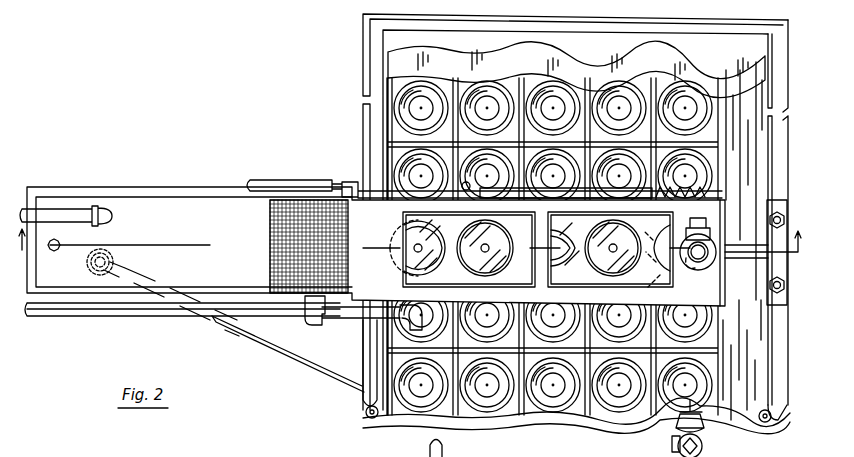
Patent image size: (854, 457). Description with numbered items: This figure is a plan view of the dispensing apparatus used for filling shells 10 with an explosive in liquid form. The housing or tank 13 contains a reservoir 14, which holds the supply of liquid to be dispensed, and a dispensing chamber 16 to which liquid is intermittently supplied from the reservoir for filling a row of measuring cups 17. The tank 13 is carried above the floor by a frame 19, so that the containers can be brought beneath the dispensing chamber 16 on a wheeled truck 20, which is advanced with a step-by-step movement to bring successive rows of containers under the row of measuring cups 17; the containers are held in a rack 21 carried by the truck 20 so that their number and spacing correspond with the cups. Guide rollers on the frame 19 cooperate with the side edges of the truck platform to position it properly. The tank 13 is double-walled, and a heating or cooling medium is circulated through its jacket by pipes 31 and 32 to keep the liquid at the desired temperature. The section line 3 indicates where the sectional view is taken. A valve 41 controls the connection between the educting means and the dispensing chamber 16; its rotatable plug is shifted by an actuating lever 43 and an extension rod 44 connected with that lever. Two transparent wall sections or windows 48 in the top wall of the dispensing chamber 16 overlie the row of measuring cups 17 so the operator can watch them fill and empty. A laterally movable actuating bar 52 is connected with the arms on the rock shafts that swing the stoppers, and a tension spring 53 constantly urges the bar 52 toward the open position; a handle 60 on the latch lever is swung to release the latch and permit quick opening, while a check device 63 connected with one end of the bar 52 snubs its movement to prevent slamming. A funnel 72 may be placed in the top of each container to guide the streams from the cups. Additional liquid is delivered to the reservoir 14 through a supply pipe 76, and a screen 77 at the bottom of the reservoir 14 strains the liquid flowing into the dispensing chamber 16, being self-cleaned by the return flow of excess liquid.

The shells 10 is at (530, 414).
The housing or tank 13 is at (212, 186).
The reservoir 14 is at (155, 215).
The dispensing chamber 16 is at (724, 208).
The measuring cup 17 is at (522, 268).
The frame 19 is at (320, 360).
The wheeled truck 20 is at (755, 162).
The rack 21 is at (720, 110).
The pipe 31 is at (348, 314).
The pipe 32 is at (116, 314).
The section line 3- 3 is at (408, 250).
The valve 41 is at (684, 254).
The actuating lever 43 is at (672, 447).
The extension rod 44 is at (500, 204).
The transparent wall sections or windows 48 is at (430, 288).
The actuating bar 52 is at (606, 178).
The tension spring 53 is at (690, 188).
The handle 60 is at (470, 184).
The check device 63 is at (279, 174).
The funnel 72 is at (583, 417).
The supply pipe 76 is at (78, 214).
The screen 77 is at (270, 240).